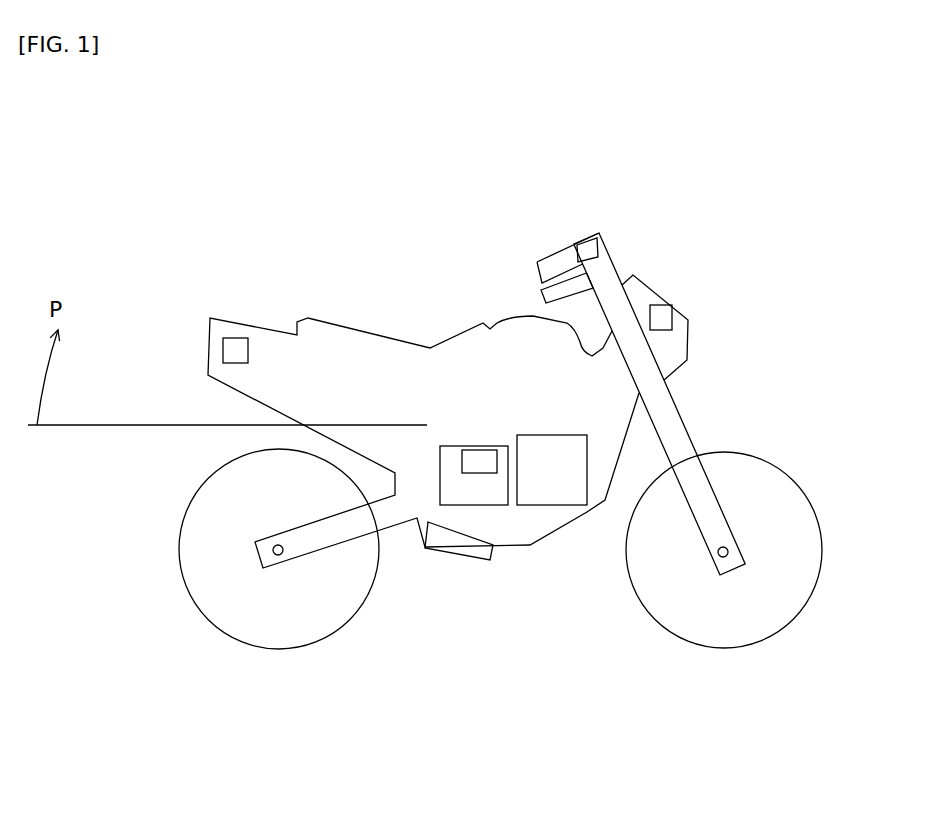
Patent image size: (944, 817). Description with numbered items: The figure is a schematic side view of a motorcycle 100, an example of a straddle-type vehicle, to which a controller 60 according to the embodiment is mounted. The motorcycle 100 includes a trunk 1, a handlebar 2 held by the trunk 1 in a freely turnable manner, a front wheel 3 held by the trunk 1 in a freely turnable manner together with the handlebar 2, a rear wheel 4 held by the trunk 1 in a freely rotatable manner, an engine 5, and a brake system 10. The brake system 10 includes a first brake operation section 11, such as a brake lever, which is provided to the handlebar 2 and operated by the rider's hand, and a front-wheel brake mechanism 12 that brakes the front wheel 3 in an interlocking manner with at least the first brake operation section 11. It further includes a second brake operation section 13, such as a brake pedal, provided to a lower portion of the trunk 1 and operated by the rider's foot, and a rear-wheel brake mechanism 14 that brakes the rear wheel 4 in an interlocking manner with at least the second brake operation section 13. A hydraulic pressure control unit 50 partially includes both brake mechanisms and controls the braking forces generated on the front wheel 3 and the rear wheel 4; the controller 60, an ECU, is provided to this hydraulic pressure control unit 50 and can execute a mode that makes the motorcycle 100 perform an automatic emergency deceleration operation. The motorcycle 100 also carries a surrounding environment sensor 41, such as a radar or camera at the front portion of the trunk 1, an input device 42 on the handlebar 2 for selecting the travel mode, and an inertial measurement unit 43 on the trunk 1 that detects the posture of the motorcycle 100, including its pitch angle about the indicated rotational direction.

The motorcycle 100 is at (770, 120).
The trunk 1 is at (362, 347).
The handlebar 2 is at (543, 262).
The front wheel 3 is at (722, 660).
The rear wheel 4 is at (280, 660).
The engine 5 is at (549, 506).
The brake system 10 is at (717, 382).
The first brake operation section 11 is at (543, 296).
The front-wheel brake mechanism 12 is at (740, 525).
The second brake operation section 13 is at (473, 557).
The rear-wheel brake mechanism 14 is at (260, 530).
The surrounding environment sensor 41 is at (661, 313).
The input device 42 is at (588, 247).
The inertial measurement unit 43 is at (234, 340).
The hydraulic pressure control unit 50 is at (459, 444).
The controller 60 is at (480, 477).